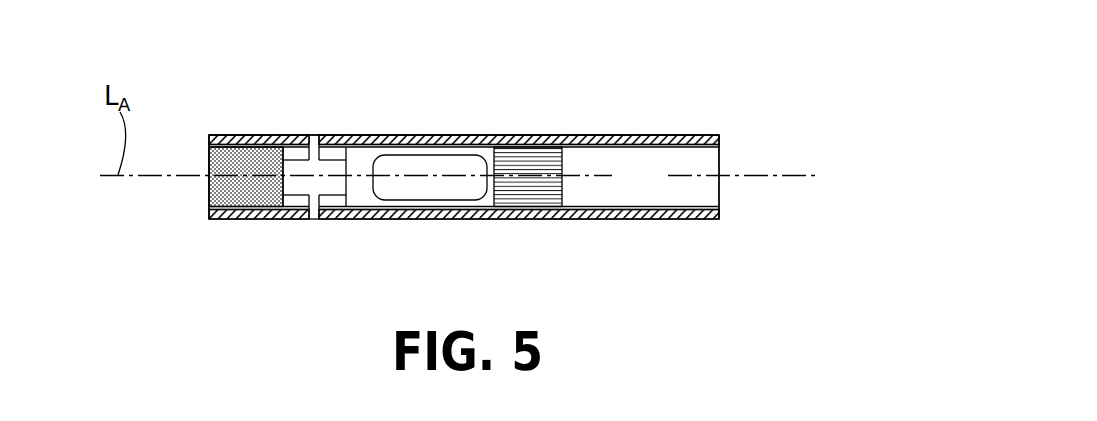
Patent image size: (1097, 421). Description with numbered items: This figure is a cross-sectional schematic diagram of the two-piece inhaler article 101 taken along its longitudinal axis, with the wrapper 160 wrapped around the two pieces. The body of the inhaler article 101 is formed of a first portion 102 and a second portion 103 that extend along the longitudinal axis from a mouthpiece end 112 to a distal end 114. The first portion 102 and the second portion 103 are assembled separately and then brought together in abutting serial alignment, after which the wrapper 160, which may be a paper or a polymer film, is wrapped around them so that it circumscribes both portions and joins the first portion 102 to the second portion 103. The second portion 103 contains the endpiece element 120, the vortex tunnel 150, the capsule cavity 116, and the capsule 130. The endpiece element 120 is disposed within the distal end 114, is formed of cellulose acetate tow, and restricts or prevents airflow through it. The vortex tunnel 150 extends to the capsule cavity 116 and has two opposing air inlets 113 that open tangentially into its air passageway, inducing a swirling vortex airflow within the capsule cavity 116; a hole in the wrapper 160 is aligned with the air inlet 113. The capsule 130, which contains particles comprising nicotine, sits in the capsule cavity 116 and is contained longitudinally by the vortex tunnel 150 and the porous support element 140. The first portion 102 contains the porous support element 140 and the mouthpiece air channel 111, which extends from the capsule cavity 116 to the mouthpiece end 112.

The two-piece inhaler article 101 is at (582, 90).
The first portion 102 is at (648, 136).
The second portion 103 is at (390, 142).
The mouthpiece air channel 111 is at (657, 188).
The mouthpiece end 112 is at (724, 136).
The air inlets 113 is at (316, 146).
The distal end 114 is at (207, 134).
The capsule cavity 116 is at (368, 202).
The endpiece element 120 is at (237, 180).
The capsule 130 is at (443, 160).
The porous support element 140 is at (527, 150).
The vortex tunnel 150 is at (294, 136).
The wrapper 160 is at (703, 136).